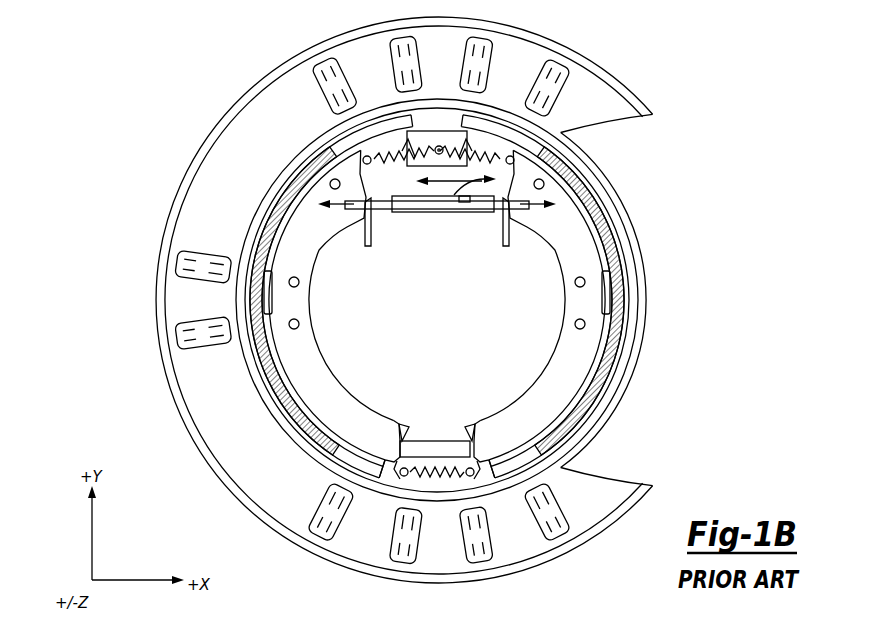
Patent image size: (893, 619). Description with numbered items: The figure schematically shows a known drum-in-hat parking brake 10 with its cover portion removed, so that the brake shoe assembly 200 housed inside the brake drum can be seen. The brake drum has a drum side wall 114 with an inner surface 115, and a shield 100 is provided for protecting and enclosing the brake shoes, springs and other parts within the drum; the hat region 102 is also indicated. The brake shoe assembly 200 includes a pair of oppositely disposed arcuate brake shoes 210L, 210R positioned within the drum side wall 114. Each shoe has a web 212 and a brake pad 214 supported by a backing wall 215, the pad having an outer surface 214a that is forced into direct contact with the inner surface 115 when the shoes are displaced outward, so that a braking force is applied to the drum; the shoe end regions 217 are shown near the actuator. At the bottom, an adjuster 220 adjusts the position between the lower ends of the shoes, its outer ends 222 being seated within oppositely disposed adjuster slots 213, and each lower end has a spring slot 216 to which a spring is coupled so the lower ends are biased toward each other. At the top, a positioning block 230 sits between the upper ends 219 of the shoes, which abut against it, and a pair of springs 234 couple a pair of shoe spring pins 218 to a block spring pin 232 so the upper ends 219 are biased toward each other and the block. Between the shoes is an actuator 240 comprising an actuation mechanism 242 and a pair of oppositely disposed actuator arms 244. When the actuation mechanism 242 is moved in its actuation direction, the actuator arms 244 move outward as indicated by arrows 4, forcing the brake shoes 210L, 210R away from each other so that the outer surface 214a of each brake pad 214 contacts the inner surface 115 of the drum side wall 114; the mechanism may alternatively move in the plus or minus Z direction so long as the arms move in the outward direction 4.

The shield 100 is at (566, 40).
The drum-in-hat parking brake 10 is at (692, 79).
The brake rotor hat portion 102 is at (709, 157).
The drum side wall 114 is at (632, 231).
The inner surface of the brake drum 115 is at (623, 257).
The brake shoe assembly 200 is at (668, 318).
The brake pad 214 is at (286, 196).
The outer surface of the brake pad 214a is at (266, 376).
The left arcuate brake shoe 210L is at (325, 353).
The right arcuate brake shoe 210R is at (543, 353).
The web 212 is at (308, 269).
The backing wall 215 is at (317, 247).
The shoe end notch 217 is at (342, 222).
The actuator arms 244 is at (372, 230).
The actuator 240 is at (433, 222).
The actuation mechanism 242 is at (464, 203).
The springs 234 is at (430, 184).
The arrows indicating outward direction 4 is at (435, 191).
The shoe spring pins 218 is at (362, 158).
The upper ends of the brake shoes 219 is at (400, 134).
The positioning block 230 is at (450, 147).
The block spring pin 232 is at (436, 146).
The adjuster 220 is at (437, 442).
The outer ends of the adjuster 222 is at (398, 424).
The adjuster slots 213 is at (397, 446).
The spring slot 216 is at (398, 476).